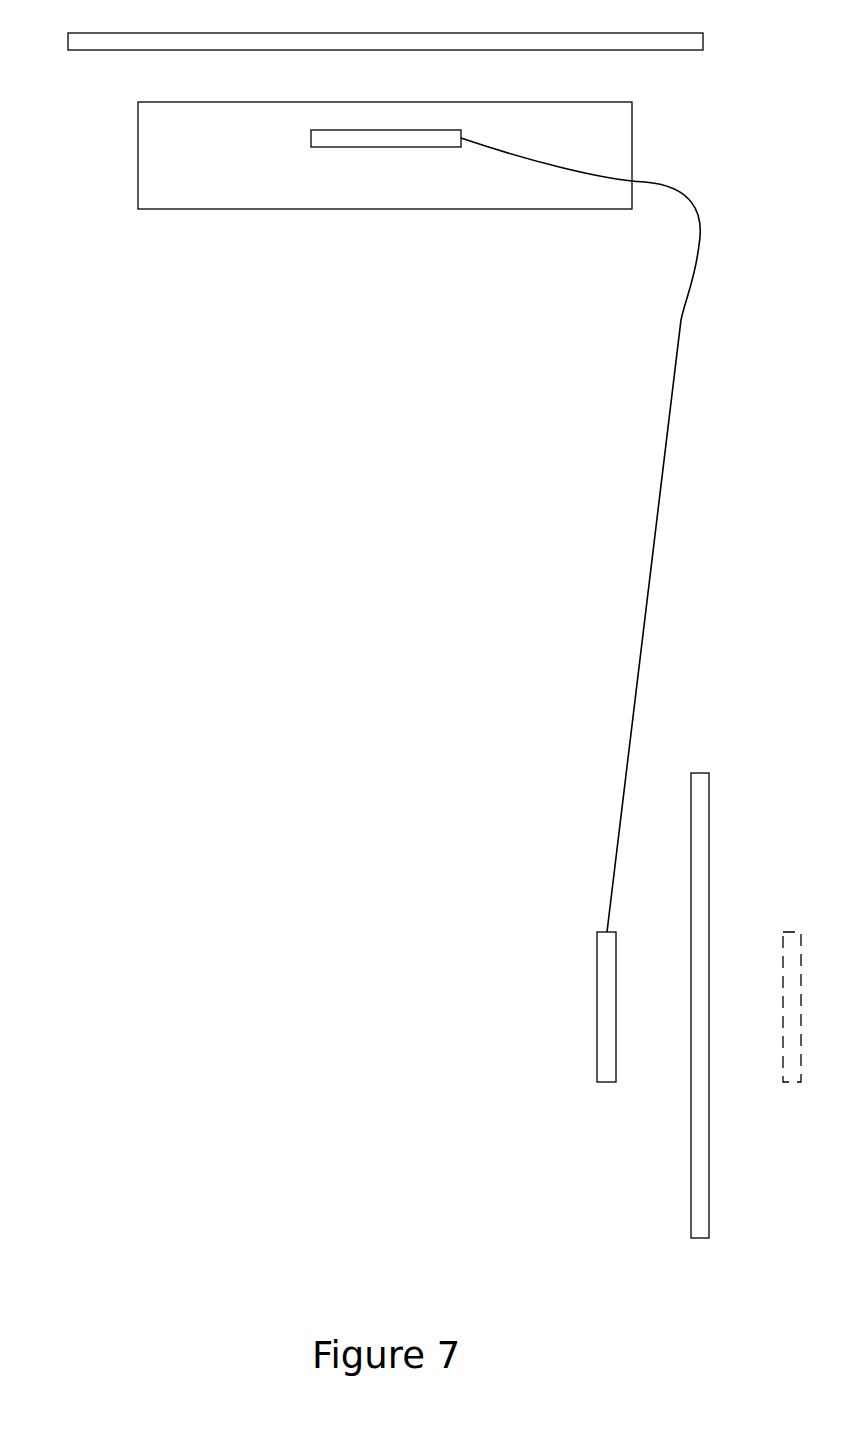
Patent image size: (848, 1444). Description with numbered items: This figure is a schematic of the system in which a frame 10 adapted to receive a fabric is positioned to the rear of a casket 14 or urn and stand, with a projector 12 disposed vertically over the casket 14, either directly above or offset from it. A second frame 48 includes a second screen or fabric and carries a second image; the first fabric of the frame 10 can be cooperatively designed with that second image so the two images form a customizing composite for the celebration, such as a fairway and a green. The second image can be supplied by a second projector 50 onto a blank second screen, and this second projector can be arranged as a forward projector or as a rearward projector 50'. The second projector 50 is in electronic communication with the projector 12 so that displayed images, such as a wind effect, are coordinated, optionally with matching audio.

The frame 10 is at (68, 42).
The projector 12 is at (311, 143).
The casket 14 is at (138, 152).
The second frame 48 is at (691, 791).
The second projector 50 is at (591, 1000).
The rearward projector 50' is at (774, 989).